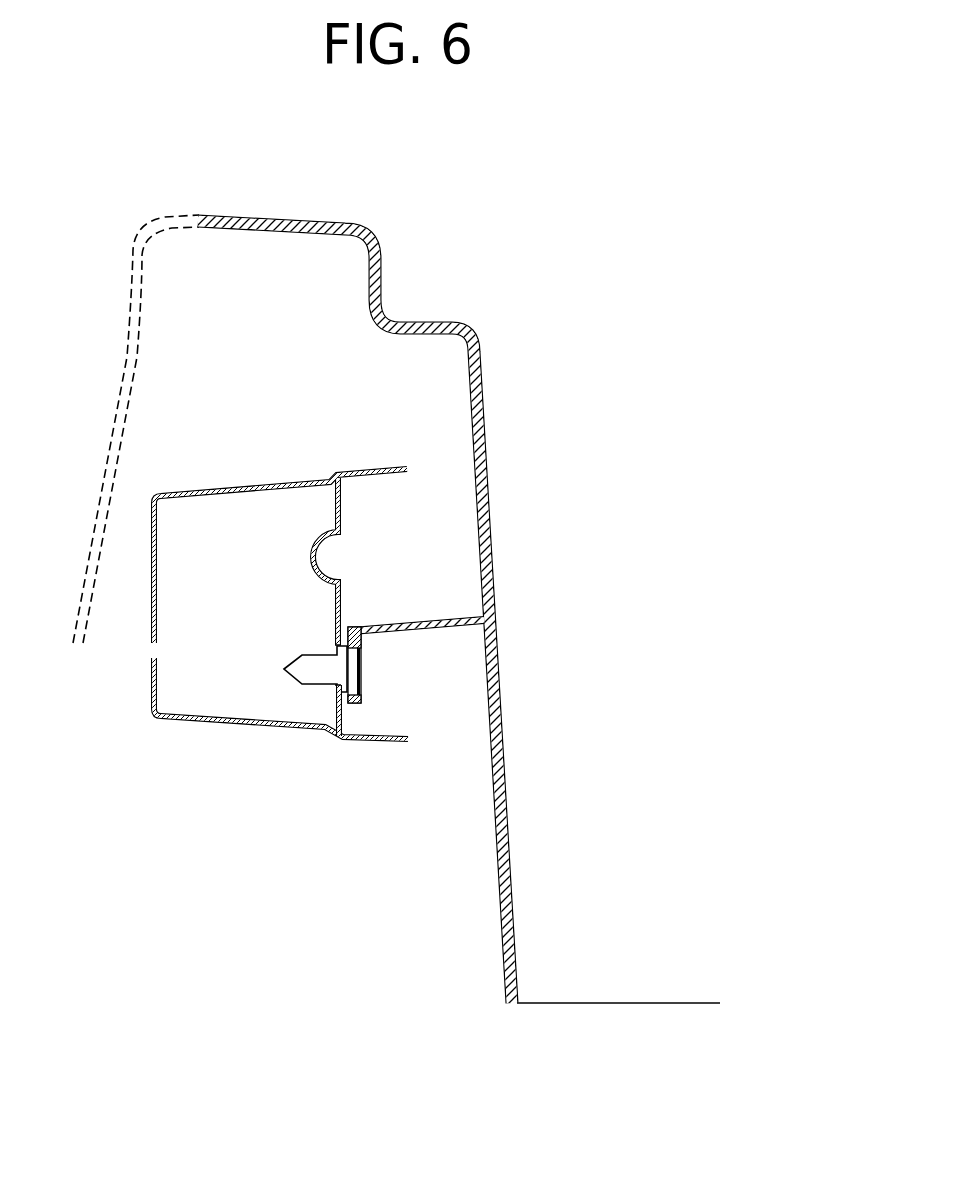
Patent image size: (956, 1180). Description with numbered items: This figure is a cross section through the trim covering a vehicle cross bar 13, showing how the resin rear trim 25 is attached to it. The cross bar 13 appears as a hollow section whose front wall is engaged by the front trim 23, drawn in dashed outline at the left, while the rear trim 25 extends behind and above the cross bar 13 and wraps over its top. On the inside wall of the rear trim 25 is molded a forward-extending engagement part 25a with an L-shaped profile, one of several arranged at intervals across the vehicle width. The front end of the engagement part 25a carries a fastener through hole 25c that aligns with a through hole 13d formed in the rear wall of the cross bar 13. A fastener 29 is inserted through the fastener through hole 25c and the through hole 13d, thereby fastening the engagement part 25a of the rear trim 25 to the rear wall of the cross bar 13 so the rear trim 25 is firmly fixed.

The cross bar 13 is at (210, 723).
The through hole 13d is at (337, 651).
The front trim 23 is at (157, 223).
The rear trim 25 is at (485, 407).
The engagement part 25a is at (416, 617).
The fastener through hole 25c is at (360, 668).
The fastener 29 is at (297, 677).